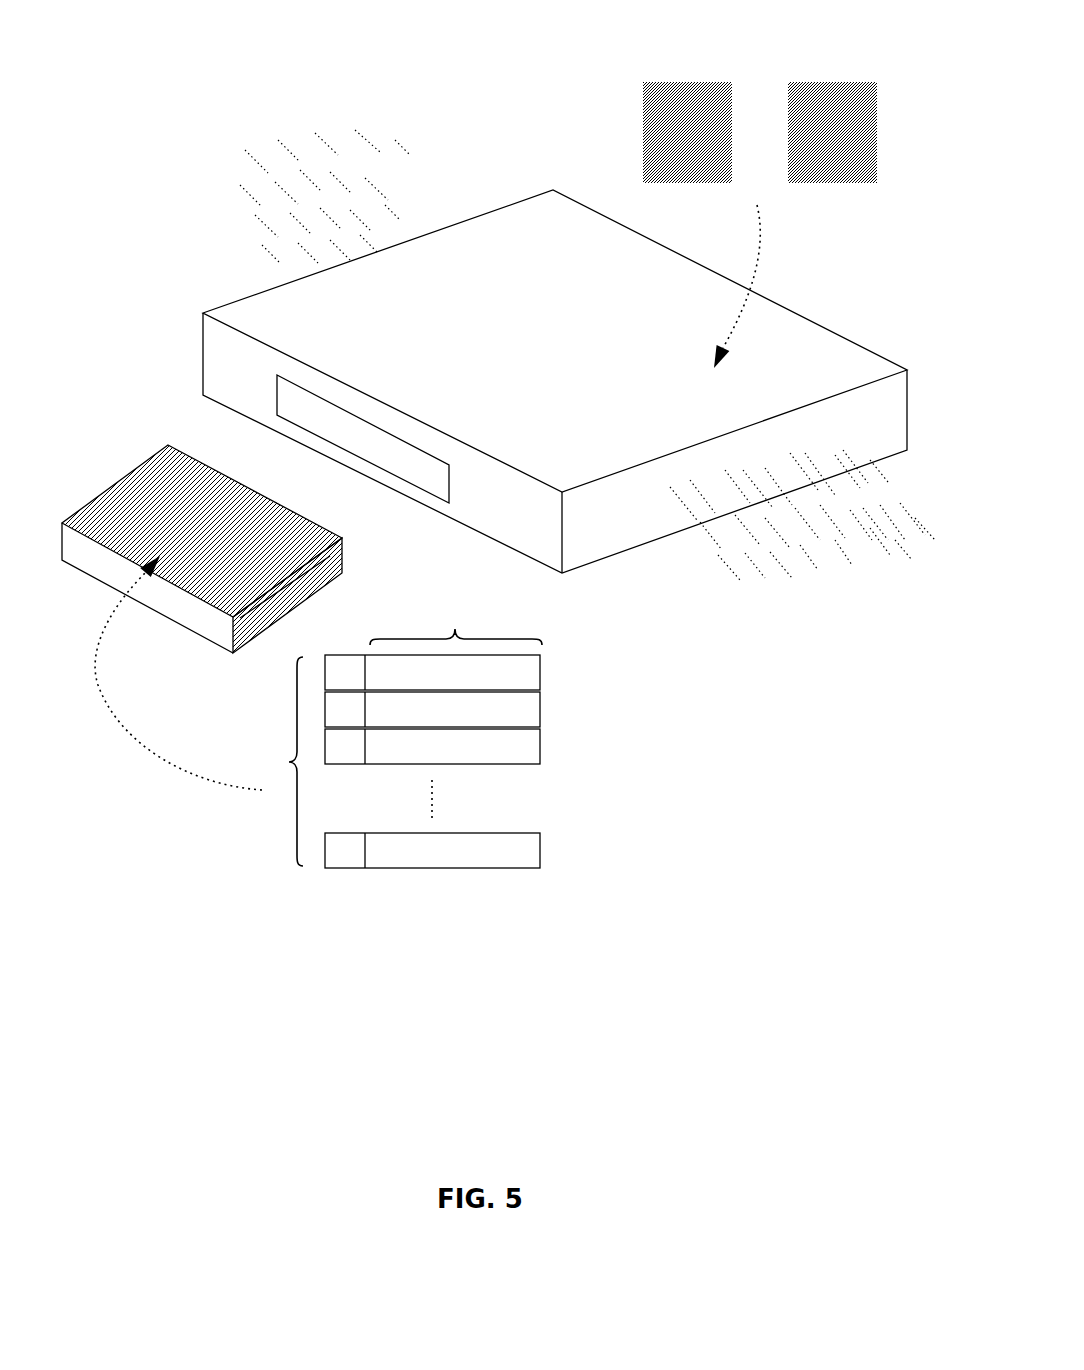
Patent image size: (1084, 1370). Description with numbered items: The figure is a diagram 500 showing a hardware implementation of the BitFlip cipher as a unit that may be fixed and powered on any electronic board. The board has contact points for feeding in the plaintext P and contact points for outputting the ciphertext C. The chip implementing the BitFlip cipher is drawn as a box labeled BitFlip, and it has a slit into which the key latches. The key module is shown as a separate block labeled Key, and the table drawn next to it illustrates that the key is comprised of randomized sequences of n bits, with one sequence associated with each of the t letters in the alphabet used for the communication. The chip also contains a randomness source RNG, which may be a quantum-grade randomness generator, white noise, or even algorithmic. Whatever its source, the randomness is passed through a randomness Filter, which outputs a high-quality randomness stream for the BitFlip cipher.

The diagram 500 is at (255, 1115).
The plaintext P is at (311, 180).
The ciphertext C is at (802, 551).
The randomness source RNG is at (684, 105).
The randomness filter Filter is at (832, 105).
The BitFlip cipher chip BitFlip is at (555, 381).
The key module Key is at (202, 549).